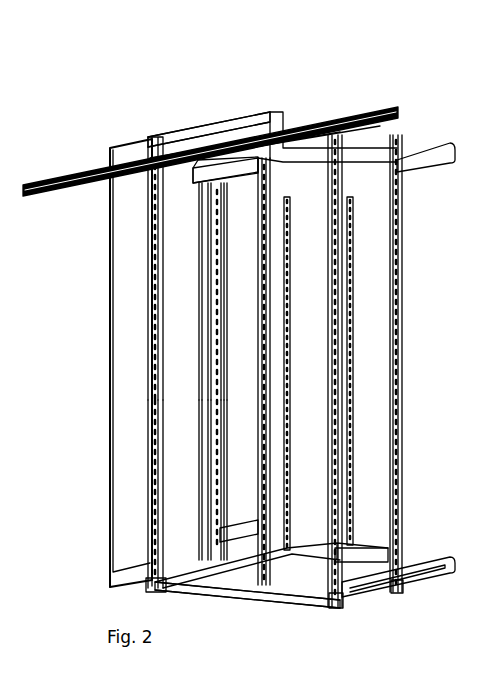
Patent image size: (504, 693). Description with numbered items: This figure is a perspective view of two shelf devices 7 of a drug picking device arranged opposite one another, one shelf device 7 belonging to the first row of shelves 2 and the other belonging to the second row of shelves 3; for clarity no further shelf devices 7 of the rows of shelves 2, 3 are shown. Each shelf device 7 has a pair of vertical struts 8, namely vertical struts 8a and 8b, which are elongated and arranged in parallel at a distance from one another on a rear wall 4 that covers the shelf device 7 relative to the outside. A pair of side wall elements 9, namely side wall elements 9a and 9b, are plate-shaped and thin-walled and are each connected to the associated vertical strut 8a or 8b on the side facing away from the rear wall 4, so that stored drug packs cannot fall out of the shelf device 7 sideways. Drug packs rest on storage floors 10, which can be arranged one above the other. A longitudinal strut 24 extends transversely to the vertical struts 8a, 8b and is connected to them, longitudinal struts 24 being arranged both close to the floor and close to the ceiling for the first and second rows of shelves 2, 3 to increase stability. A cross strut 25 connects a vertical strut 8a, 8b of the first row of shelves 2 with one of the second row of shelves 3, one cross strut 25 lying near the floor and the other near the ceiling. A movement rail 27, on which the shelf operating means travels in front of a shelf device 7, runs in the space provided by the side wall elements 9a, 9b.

The first row of shelves 2 is at (128, 408).
The second row of shelves 3 is at (305, 568).
The rear wall 4 is at (130, 148).
The shelf device 7 is at (180, 120).
The pair of vertical struts 8 is at (56, 538).
The vertical strut 8a is at (150, 462).
The vertical strut 8b is at (217, 490).
The pair of side wall elements 9 is at (56, 340).
The side wall element 9a is at (177, 278).
The side wall element 9b is at (242, 315).
The storage floor 10 is at (227, 177).
The longitudinal strut 24 is at (258, 117).
The cross strut 25 is at (292, 133).
The movement rail 27 is at (369, 113).